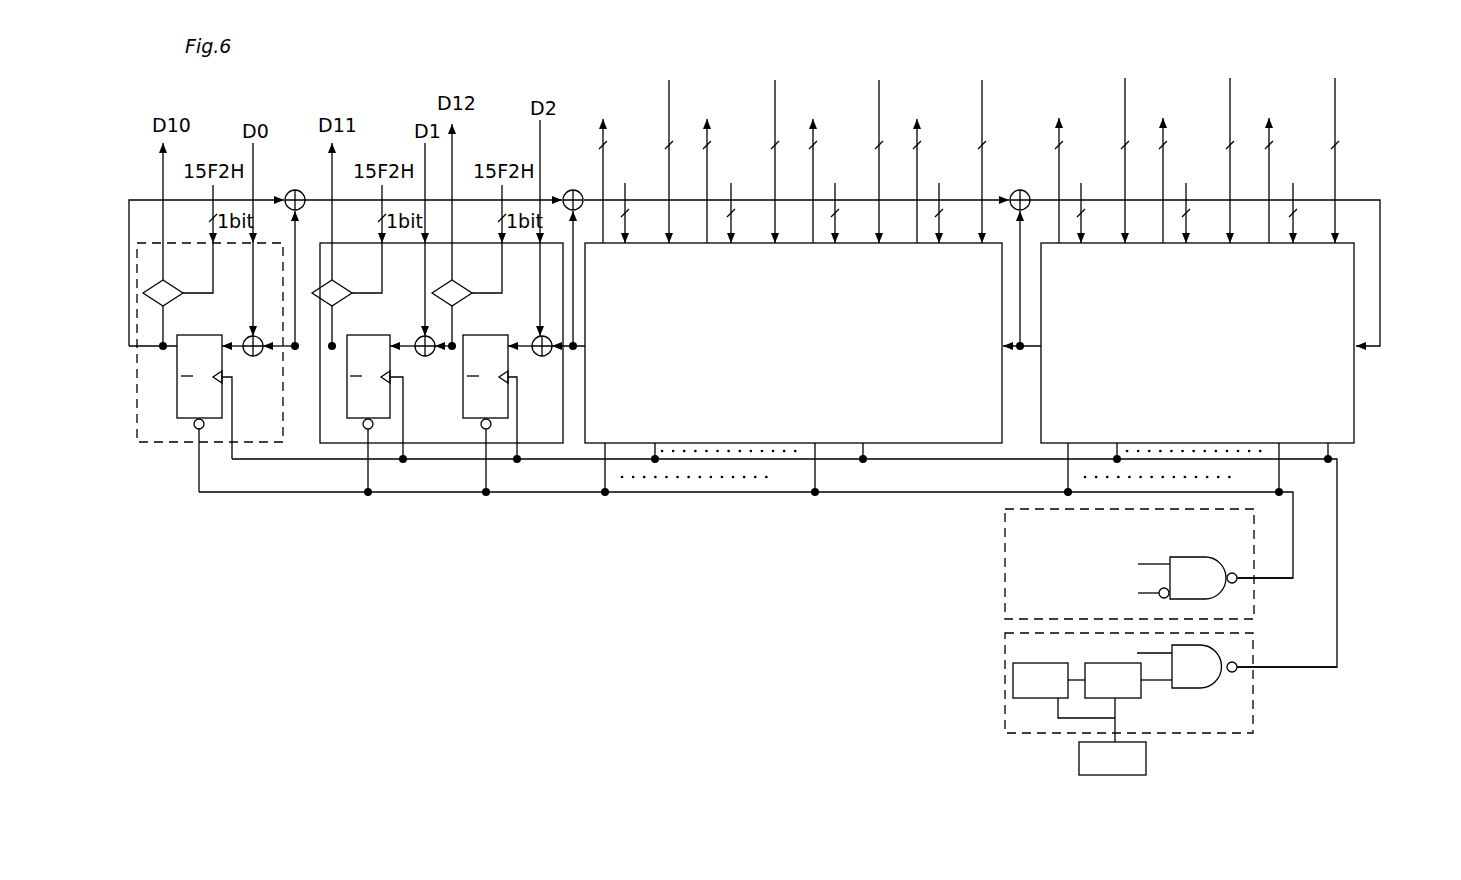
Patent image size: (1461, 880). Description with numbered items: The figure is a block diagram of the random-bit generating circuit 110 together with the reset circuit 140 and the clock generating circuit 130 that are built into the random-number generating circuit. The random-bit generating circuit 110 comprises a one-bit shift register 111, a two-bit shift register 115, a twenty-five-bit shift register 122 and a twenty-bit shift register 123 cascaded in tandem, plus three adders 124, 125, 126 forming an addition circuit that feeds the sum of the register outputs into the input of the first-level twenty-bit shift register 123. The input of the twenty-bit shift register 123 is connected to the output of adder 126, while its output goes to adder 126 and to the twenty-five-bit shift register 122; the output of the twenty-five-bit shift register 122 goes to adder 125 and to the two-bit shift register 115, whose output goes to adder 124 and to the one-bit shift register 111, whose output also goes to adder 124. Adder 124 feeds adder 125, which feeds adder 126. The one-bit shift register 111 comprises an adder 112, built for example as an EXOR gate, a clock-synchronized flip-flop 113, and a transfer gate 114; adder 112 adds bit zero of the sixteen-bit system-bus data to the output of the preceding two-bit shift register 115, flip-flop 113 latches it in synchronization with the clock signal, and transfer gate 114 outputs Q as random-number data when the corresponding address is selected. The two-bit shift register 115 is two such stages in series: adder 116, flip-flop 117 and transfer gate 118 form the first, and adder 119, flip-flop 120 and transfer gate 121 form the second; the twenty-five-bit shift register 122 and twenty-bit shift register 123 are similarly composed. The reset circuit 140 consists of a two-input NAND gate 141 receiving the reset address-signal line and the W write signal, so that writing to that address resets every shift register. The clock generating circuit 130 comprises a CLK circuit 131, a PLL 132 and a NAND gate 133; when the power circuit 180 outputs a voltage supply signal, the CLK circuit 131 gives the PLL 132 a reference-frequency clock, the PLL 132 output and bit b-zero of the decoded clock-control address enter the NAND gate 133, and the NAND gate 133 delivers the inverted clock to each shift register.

The random-bit generating circuit 110 is at (708, 39).
The 1-bit shift register 111 is at (137, 432).
The adder 112 is at (253, 356).
The flip-flop 113 is at (200, 335).
The transfer gate 114 is at (172, 290).
The 2-bit shift register 115 is at (320, 430).
The adder 116 is at (542, 356).
The flip-flop 117 is at (488, 335).
The transfer gate 118 is at (460, 290).
The adder 119 is at (425, 356).
The flip-flop 120 is at (368, 335).
The transfer gate 121 is at (340, 290).
The 25-bit shift register 122 is at (798, 410).
The 20-bit shift register 123 is at (1208, 410).
The adder 124 is at (295, 190).
The adder 125 is at (573, 190).
The adder 126 is at (1020, 190).
The clock generating circuit 130 is at (1005, 662).
The CLK circuit 131 is at (1048, 698).
The PLL 132 is at (1123, 698).
The NAND gate 133 is at (1190, 688).
The reset circuit 140 is at (1003, 566).
The NAND gate 141 is at (1188, 557).
The power circuit 180 is at (1079, 758).